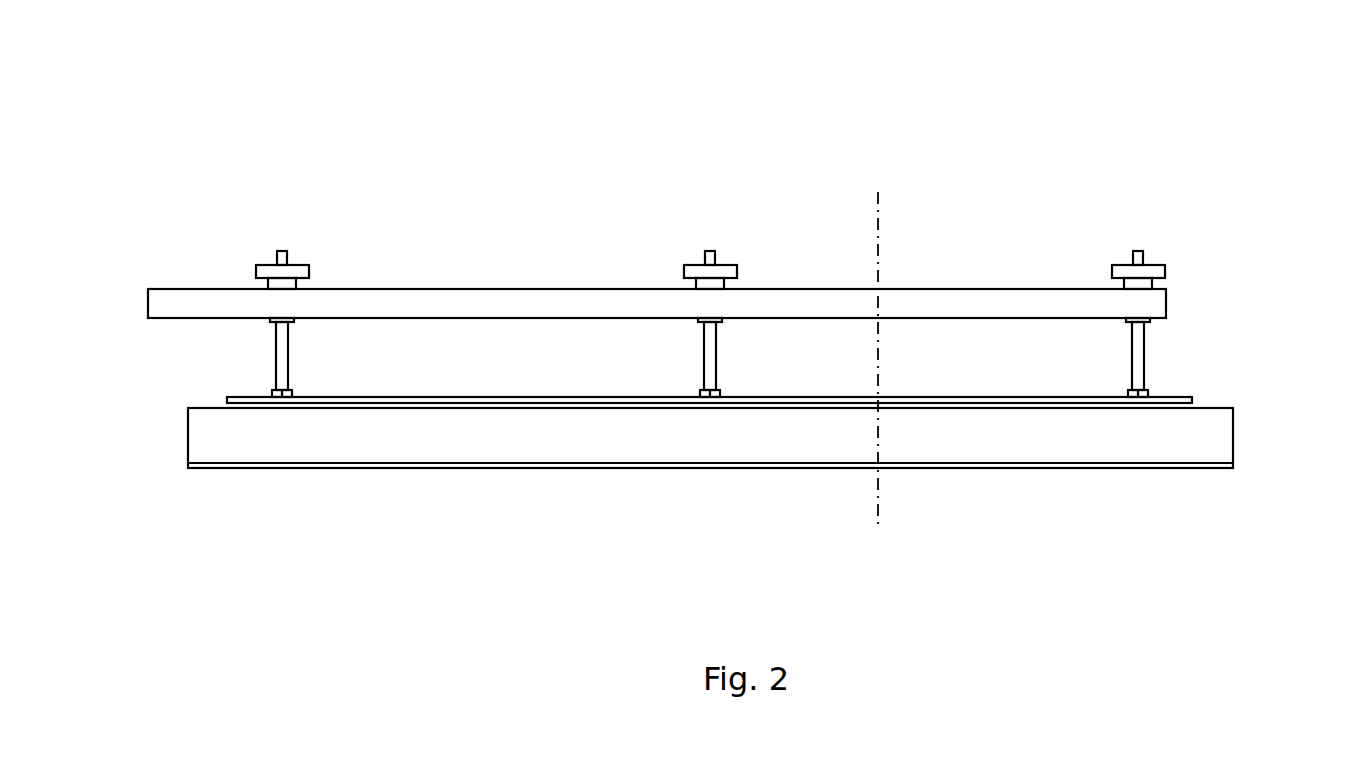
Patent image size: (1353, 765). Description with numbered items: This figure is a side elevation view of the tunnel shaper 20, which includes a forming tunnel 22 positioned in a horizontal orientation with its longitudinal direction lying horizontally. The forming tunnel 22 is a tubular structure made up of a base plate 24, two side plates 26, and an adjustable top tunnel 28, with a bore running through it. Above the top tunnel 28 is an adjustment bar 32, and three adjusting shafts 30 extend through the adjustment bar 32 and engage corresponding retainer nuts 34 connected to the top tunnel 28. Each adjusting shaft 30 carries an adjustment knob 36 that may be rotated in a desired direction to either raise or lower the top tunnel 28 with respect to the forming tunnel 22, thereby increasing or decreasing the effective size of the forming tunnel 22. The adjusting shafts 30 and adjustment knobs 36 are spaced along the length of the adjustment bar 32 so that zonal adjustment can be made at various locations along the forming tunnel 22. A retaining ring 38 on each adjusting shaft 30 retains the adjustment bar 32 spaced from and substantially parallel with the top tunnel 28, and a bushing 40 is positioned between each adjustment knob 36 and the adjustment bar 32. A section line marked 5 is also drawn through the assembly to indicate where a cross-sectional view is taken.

The tunnel shaper 20 is at (312, 160).
The forming tunnel 22 is at (1238, 437).
The base plate 24 is at (418, 469).
The side plates 26 is at (1120, 449).
The adjustable top tunnel 28 is at (1170, 397).
The adjusting shafts 30 is at (289, 355).
The adjustment bar 32 is at (402, 300).
The retainer nut 34 is at (720, 392).
The adjustment knob 36 is at (308, 265).
The retaining ring 38 is at (702, 320).
The bushing 40 is at (697, 285).
The section line for Fig. 5 is at (878, 192).